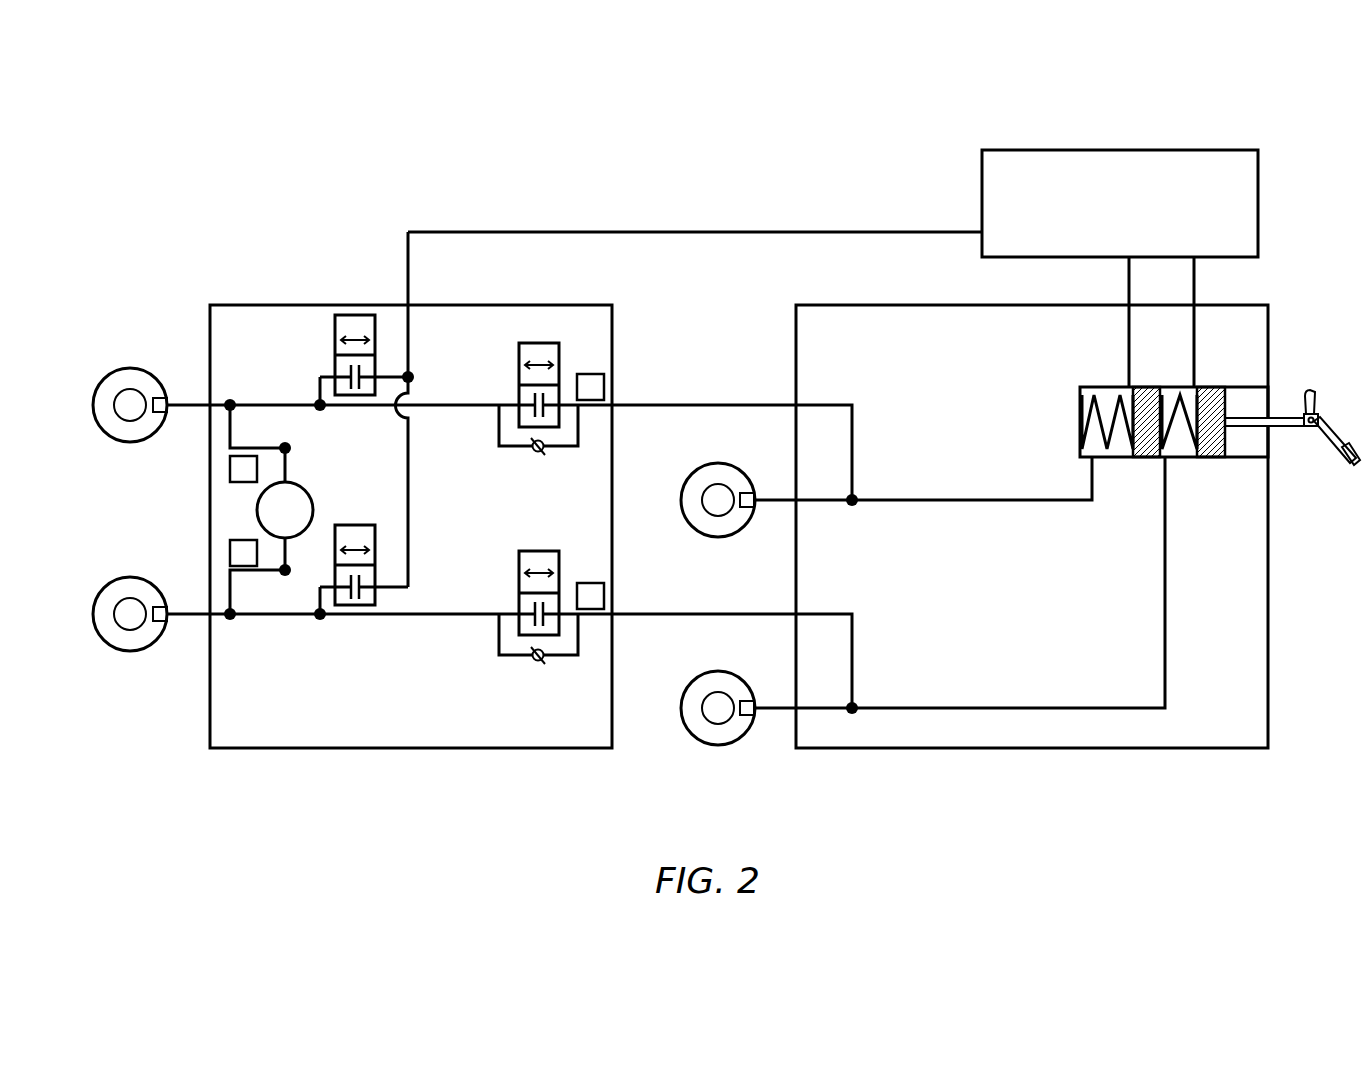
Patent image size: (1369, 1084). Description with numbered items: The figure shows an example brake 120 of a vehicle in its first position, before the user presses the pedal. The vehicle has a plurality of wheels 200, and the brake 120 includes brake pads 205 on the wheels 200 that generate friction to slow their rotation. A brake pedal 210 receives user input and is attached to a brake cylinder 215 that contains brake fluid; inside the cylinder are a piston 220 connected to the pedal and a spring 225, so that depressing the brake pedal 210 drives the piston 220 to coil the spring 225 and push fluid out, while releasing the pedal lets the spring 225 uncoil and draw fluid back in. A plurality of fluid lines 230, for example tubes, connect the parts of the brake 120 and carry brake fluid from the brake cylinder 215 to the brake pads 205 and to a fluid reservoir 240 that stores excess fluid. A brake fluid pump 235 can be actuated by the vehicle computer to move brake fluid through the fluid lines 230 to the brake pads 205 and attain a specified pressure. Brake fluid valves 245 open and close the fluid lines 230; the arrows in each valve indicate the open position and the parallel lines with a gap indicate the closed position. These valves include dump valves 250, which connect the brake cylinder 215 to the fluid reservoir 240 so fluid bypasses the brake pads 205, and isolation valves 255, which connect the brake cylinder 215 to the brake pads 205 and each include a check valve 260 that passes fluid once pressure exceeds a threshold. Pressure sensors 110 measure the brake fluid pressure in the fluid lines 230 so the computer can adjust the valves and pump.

The pressure sensor 110 is at (230, 545).
The brake 120 is at (209, 220).
The wheels 200 is at (110, 375).
The brake pads 205 is at (160, 396).
The brake pedal 210 is at (1330, 450).
The brake cylinder 215 is at (1243, 459).
The piston 220 is at (1145, 387).
The spring 225 is at (1085, 395).
The fluid lines 230 is at (692, 232).
The brake fluid pump 235 is at (300, 475).
The fluid reservoir 240 is at (1225, 150).
The brake fluid valves 245 is at (338, 318).
The dump valve 250 is at (377, 340).
The isolation valve 255 is at (560, 370).
The check valve 260 is at (536, 452).